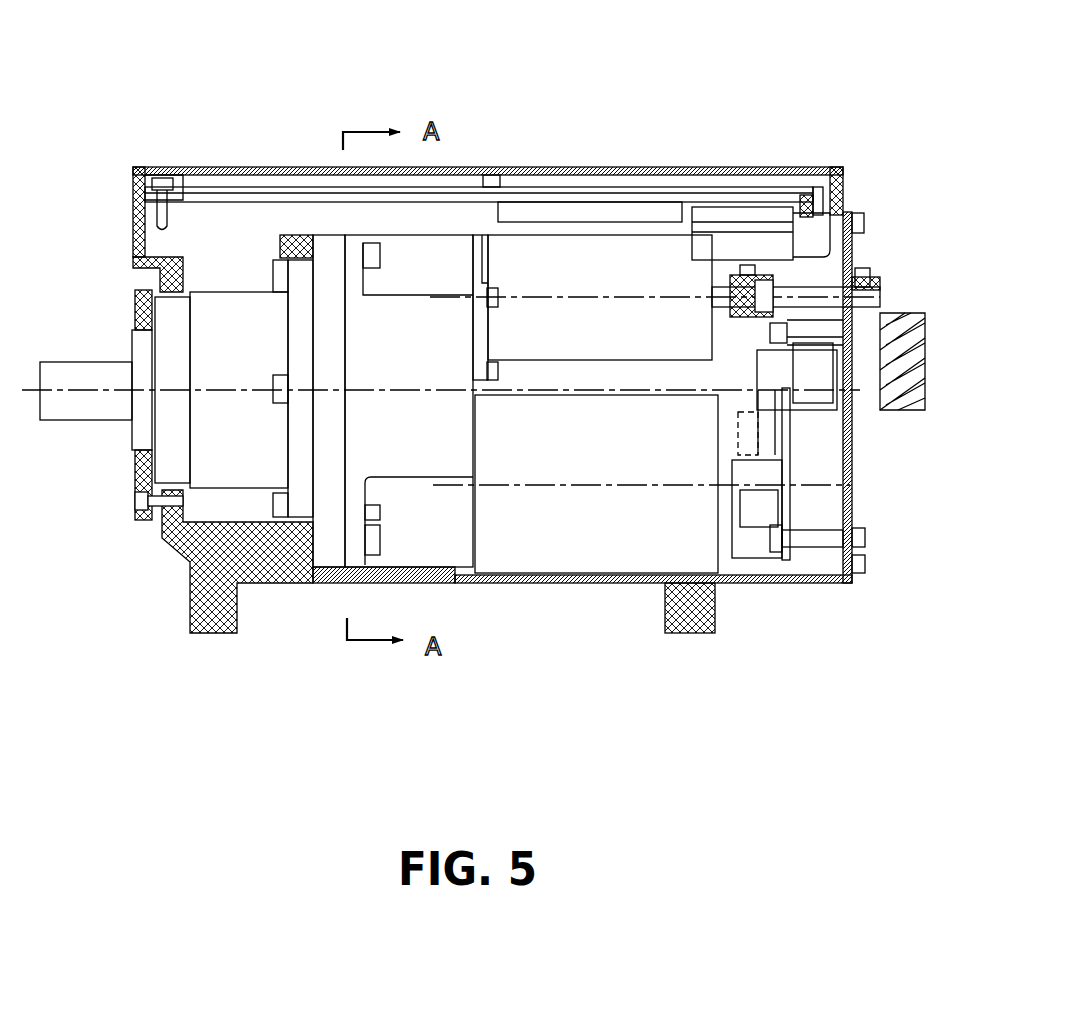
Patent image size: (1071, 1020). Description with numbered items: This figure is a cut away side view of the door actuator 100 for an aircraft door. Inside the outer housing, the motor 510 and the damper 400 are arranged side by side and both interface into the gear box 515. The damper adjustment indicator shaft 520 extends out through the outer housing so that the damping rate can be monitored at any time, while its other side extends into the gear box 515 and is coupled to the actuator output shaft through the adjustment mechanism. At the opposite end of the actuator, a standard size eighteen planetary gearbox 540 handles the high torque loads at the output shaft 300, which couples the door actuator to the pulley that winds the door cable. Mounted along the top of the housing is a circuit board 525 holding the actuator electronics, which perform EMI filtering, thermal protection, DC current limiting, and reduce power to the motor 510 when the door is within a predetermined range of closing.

The door actuator 100 is at (517, 660).
The output shaft 300 is at (61, 355).
The damper 400 is at (593, 228).
The motor 510 is at (593, 578).
The gear box 515 is at (341, 571).
The damper adjustment indicator shaft 520 is at (878, 272).
The circuit board 525 is at (678, 178).
The planetary gearbox 540 is at (235, 492).